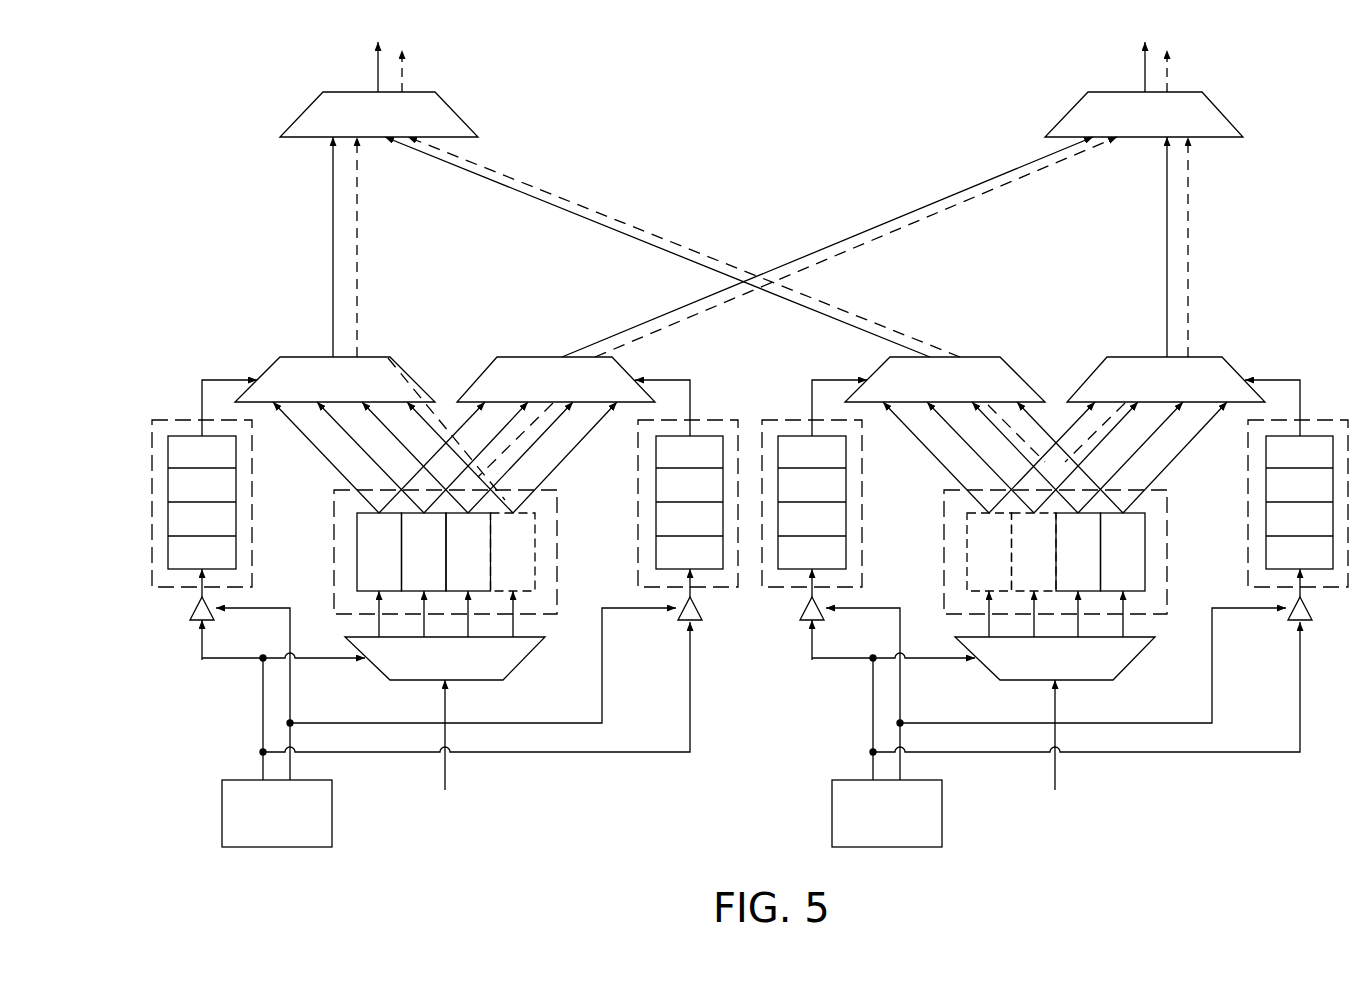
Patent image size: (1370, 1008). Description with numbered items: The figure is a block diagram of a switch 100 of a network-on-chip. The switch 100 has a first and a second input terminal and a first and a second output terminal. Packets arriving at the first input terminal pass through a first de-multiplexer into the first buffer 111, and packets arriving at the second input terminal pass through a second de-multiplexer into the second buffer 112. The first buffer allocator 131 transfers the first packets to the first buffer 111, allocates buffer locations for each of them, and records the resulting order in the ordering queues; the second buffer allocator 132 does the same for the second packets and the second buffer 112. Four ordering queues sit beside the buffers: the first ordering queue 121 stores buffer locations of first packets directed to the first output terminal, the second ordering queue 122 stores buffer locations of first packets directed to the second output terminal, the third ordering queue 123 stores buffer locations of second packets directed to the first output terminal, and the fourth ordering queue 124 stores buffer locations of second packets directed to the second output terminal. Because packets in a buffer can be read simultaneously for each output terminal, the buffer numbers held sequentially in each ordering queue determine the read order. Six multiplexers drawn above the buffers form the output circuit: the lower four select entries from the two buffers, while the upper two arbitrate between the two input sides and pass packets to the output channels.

The switch 100 is at (1005, 29).
The first buffer 111 is at (334, 548).
The second buffer 112 is at (944, 548).
The first ordering queue 121 is at (168, 420).
The second ordering queue 122 is at (722, 420).
The third ordering queue 123 is at (780, 420).
The fourth ordering queue 124 is at (1332, 420).
The first buffer allocator 131 is at (333, 810).
The second buffer allocator 132 is at (943, 810).